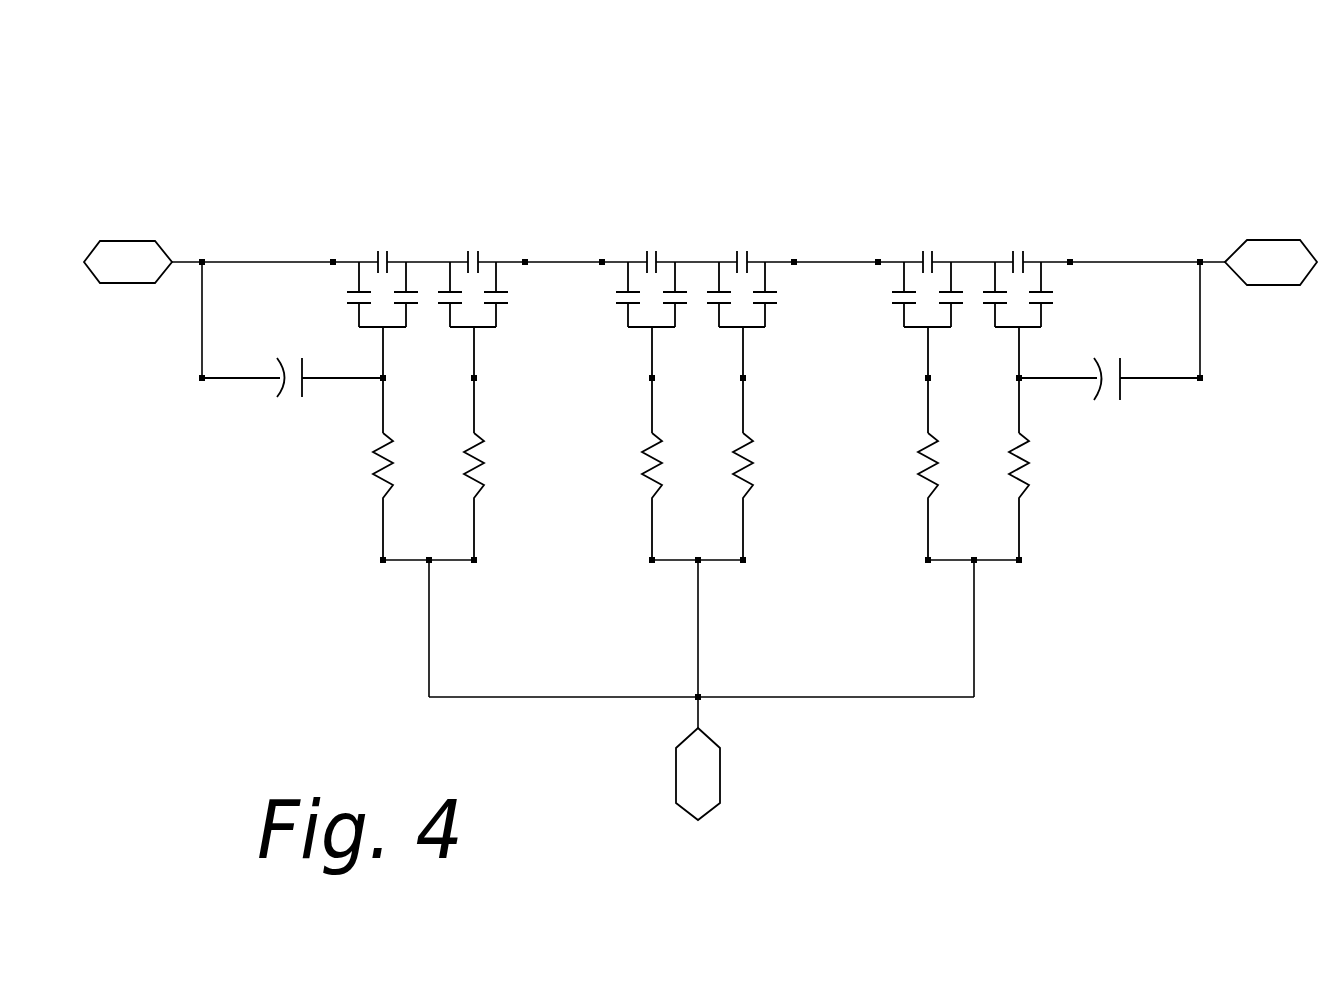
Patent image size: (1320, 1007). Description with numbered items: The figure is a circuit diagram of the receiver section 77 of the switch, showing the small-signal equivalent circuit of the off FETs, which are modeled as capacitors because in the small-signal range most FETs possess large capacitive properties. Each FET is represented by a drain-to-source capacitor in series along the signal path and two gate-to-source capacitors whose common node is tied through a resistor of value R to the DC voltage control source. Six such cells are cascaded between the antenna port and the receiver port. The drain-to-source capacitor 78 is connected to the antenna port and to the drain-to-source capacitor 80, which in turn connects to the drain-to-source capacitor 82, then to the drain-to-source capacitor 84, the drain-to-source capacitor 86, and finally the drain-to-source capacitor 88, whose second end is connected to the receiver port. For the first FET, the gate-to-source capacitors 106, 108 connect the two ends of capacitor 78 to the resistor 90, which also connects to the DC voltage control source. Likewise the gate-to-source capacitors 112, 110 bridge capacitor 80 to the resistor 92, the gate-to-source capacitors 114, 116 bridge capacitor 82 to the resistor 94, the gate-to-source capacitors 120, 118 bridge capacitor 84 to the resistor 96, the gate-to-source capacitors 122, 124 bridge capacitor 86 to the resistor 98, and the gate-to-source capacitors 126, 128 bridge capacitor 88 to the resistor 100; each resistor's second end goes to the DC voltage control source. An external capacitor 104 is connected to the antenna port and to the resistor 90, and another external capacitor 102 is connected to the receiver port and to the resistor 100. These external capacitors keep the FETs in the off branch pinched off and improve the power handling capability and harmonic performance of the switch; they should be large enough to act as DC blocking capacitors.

The receiver section 77 is at (200, 112).
The drain-to-source capacitor 78 is at (378, 299).
The drain-to-source capacitor 80 is at (487, 287).
The drain-to-source capacitor 82 is at (650, 284).
The drain-to-source capacitor 84 is at (768, 289).
The drain-to-source capacitor 86 is at (925, 285).
The drain-to-source capacitor 88 is at (1085, 289).
The resistor 90 is at (376, 477).
The resistor 92 is at (480, 467).
The resistor 94 is at (646, 469).
The resistor 96 is at (746, 459).
The resistor 98 is at (921, 475).
The resistor 100 is at (1024, 470).
The external capacitor 102 is at (1124, 389).
The external capacitor 104 is at (275, 384).
The gate-to-source capacitor 106 is at (355, 306).
The gate-to-source capacitor 108 is at (411, 306).
The gate-to-source capacitor 110 is at (500, 306).
The gate-to-source capacitor 112 is at (443, 289).
The gate-to-source capacitor 114 is at (622, 306).
The gate-to-source capacitor 116 is at (681, 306).
The gate-to-source capacitor 118 is at (770, 306).
The gate-to-source capacitor 120 is at (719, 285).
The gate-to-source capacitor 122 is at (898, 306).
The gate-to-source capacitor 124 is at (956, 306).
The gate-to-source capacitor 126 is at (995, 286).
The gate-to-source capacitor 128 is at (1050, 290).